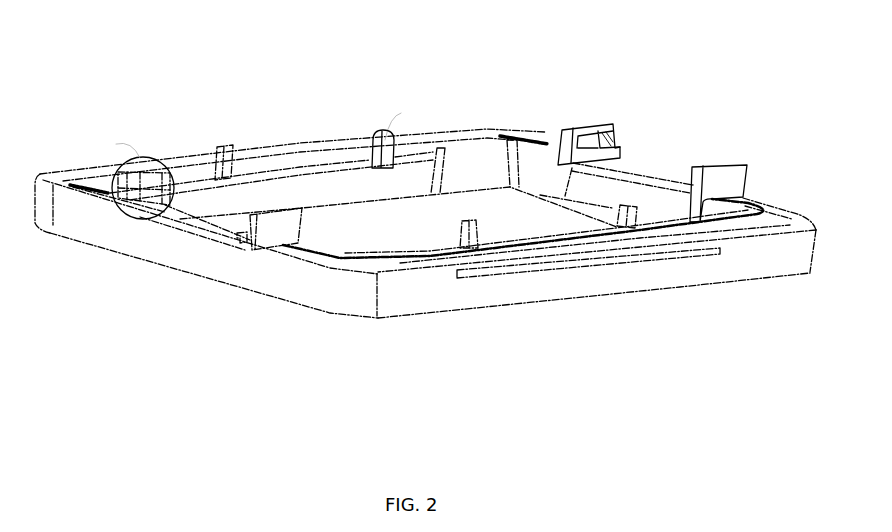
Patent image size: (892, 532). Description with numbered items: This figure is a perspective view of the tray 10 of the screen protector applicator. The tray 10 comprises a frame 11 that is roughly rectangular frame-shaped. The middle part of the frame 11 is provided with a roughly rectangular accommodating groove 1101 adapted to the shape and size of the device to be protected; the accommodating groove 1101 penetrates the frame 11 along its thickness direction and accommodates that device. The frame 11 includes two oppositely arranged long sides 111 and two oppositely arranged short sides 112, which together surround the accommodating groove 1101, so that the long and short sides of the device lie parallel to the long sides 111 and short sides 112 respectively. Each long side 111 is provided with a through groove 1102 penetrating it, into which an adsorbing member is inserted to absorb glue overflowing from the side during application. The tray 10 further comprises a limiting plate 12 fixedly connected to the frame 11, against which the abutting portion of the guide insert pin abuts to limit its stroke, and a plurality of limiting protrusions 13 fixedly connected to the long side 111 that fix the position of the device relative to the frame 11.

The tray 10 is at (130, 33).
The frame 11 is at (120, 348).
The limiting plate 12 is at (143, 205).
The limiting protrusion 13 is at (382, 146).
The long side 111 is at (400, 300).
The short side 112 is at (250, 288).
The accommodating groove 1101 is at (470, 204).
The through groove 1102 is at (603, 262).